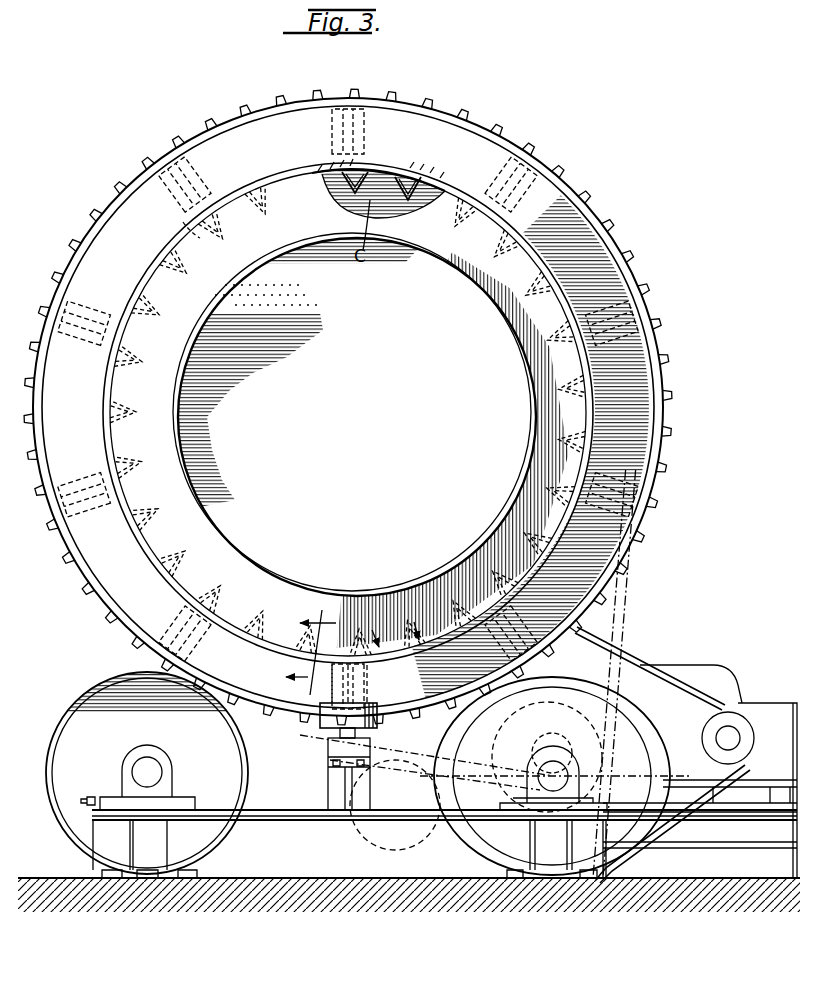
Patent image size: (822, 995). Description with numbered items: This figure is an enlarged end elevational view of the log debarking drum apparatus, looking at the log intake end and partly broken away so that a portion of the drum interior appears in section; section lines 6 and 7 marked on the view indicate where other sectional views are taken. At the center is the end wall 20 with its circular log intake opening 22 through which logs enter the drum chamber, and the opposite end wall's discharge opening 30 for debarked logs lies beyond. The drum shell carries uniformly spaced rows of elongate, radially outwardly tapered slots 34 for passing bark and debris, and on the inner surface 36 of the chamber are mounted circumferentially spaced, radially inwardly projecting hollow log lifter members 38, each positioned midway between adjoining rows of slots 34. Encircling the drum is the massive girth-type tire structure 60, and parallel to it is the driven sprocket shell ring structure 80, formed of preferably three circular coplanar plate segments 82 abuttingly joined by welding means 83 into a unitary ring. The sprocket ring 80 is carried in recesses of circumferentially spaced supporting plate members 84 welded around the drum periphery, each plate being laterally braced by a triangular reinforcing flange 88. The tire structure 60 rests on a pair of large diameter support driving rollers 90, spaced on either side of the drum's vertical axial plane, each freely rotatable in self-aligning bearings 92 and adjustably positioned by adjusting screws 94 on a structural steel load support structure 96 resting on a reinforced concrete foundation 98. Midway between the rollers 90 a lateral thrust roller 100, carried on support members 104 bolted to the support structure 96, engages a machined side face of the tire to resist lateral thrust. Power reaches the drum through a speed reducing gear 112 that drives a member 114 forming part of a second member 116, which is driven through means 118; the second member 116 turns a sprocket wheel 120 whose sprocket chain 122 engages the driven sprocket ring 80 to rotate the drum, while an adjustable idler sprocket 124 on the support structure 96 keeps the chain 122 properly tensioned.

The end wall 20 is at (200, 525).
The log intake opening 22 is at (205, 372).
The discharge opening 30 is at (514, 348).
The slots 34 is at (322, 170).
The inner surface 36 is at (393, 172).
The log lifter members 38 is at (345, 194).
The tire structure 60 is at (250, 723).
The sprocket shell ring structure 80 is at (665, 326).
The plate segments 82 is at (128, 186).
The welding means 83 is at (272, 141).
The supporting plate members 84 is at (215, 172).
The reinforcing flanges 88 is at (184, 222).
The support driving rollers 90 is at (96, 700).
The self-aligning bearings 92 is at (172, 758).
The adjusting screws 94 is at (88, 799).
The load support structure 96 is at (242, 833).
The reinforced concrete foundation 98 is at (685, 878).
The lateral thrust roller 100 is at (320, 712).
The support members 104 is at (328, 790).
The speed reducing gear 112 is at (774, 718).
The driving member 114 is at (742, 746).
The second member 116 is at (633, 670).
The drive means 118 is at (708, 700).
The sprocket wheel 120 is at (512, 727).
The sprocket chain 122 is at (645, 612).
The adjustable idler sprocket 124 is at (347, 850).
The section line 6- 6 is at (393, 624).
The section line 7- 7 is at (311, 653).